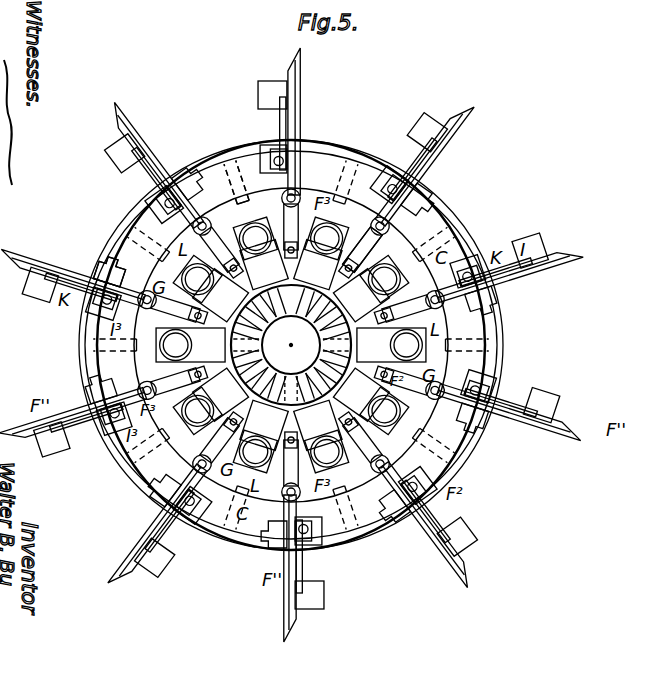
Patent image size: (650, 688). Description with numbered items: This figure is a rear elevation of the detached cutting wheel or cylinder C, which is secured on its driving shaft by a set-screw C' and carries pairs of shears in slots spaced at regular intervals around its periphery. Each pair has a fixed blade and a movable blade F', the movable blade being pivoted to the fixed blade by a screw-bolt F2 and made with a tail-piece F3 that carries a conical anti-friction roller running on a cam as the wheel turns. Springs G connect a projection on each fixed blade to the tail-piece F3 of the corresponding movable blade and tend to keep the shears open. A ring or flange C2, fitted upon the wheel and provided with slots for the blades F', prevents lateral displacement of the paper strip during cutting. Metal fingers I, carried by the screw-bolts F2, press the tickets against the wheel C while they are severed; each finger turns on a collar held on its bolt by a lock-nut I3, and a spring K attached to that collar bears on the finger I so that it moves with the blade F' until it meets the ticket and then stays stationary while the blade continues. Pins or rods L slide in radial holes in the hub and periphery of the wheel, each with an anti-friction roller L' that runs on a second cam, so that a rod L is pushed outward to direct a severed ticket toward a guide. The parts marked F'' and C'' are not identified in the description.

The metal finger I is at (272, 95).
The spring K is at (280, 128).
The movable blade F' is at (310, 121).
The knife arm F'' is at (154, 165).
The screw-bolt F2 is at (104, 304).
The tail-piece F3 is at (267, 154).
The nut I3 is at (238, 183).
The spring G is at (285, 198).
The pin or rod L is at (363, 241).
The anti-friction roller L' is at (190, 345).
The cutting wheel or cylinder C is at (291, 345).
The set-screw C' is at (318, 265).
The arm support C'' is at (290, 231).
The ring or flange C2 is at (448, 204).